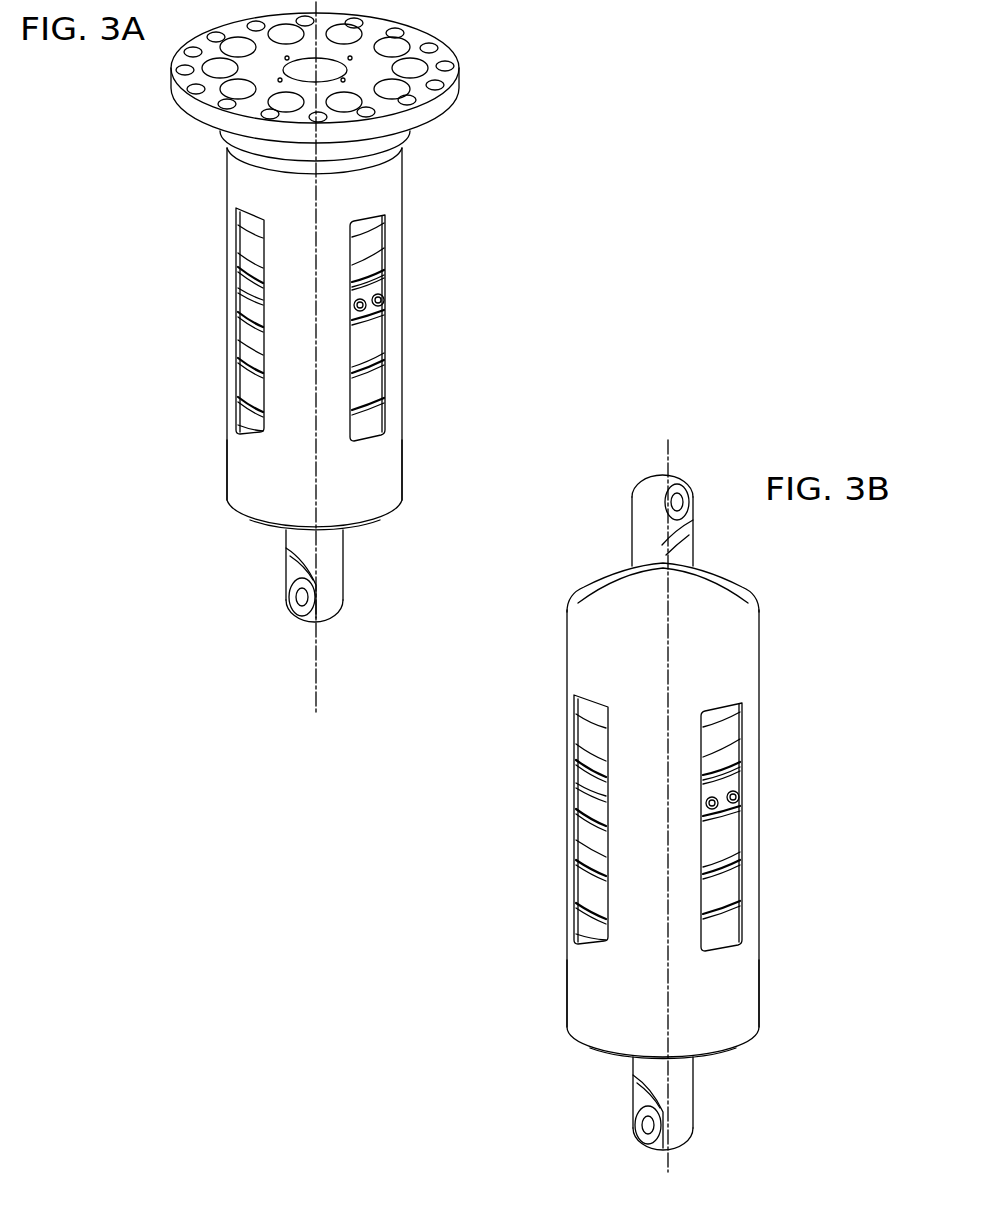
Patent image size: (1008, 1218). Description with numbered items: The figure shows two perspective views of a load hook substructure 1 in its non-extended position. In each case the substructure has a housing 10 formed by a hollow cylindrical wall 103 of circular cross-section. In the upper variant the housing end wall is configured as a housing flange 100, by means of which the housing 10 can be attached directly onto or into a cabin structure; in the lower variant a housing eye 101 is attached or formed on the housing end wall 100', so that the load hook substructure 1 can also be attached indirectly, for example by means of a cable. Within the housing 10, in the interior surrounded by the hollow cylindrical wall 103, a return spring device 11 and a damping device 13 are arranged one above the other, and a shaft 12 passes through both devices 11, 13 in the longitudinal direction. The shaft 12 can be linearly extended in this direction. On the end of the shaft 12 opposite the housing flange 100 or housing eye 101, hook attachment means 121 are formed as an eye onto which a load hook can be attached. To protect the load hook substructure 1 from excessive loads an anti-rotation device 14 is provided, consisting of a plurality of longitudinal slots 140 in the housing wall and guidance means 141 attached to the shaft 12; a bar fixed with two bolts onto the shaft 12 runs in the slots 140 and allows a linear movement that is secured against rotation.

In FIG. 3A, the load hook substructure 1 is at (447, 218).
In FIG. 3B, the load hook substructure 1 is at (553, 765).
In FIG. 3A, the housing 10 is at (324, 481).
In FIG. 3B, the housing 10 is at (687, 1006).
In FIG. 3A, the return spring device 11 is at (207, 160).
In FIG. 3B, the return spring device 11 is at (767, 663).
In FIG. 3A, the shaft 12 is at (317, 557).
In FIG. 3B, the shaft 12 is at (658, 1083).
In FIG. 3A, the damping device 13 is at (207, 310).
In FIG. 3B, the damping device 13 is at (767, 800).
In FIG. 3A, the anti-rotation device 14 is at (385, 299).
In FIG. 3B, the anti-rotation device 14 is at (747, 792).
In FIG. 3A, the housing flange 100 is at (409, 87).
In FIG. 3B, the housing end wall 100' is at (589, 619).
In FIG. 3B, the housing eye 101 is at (660, 508).
In FIG. 3A, the hollow cylindrical wall 103 is at (250, 487).
In FIG. 3B, the hollow cylindrical wall 103 is at (718, 975).
In FIG. 3A, the hook attachment means 121 is at (293, 593).
In FIG. 3B, the hook attachment means 121 is at (648, 1126).
In FIG. 3A, the longitudinal slot 140 is at (388, 252).
In FIG. 3A, the guidance means 141 is at (364, 308).